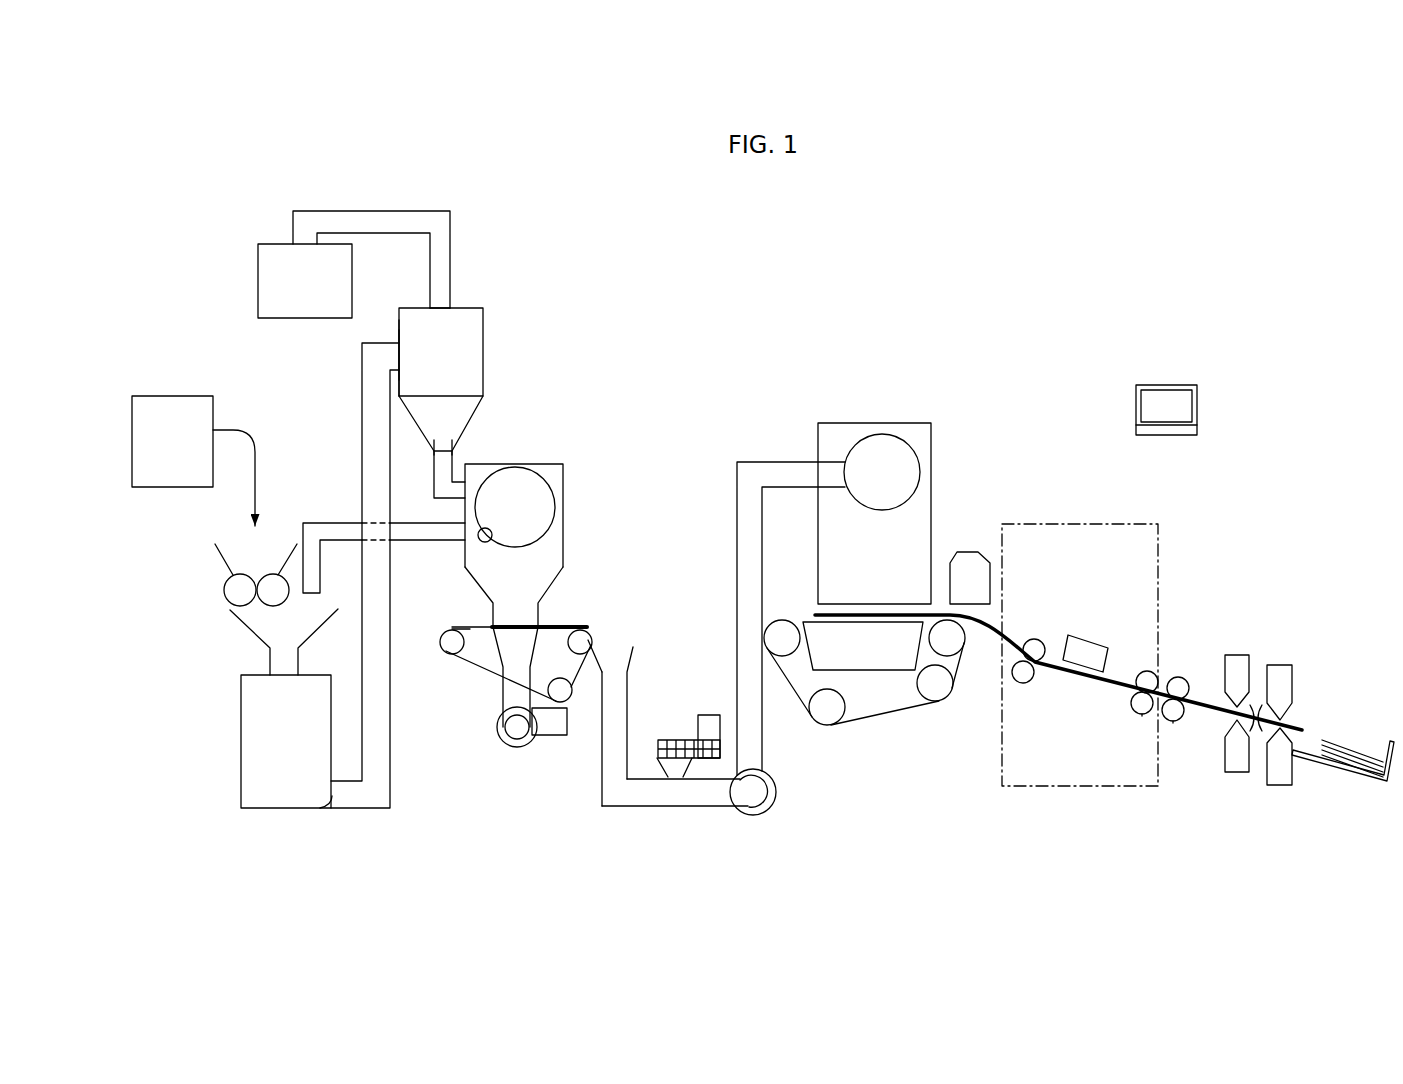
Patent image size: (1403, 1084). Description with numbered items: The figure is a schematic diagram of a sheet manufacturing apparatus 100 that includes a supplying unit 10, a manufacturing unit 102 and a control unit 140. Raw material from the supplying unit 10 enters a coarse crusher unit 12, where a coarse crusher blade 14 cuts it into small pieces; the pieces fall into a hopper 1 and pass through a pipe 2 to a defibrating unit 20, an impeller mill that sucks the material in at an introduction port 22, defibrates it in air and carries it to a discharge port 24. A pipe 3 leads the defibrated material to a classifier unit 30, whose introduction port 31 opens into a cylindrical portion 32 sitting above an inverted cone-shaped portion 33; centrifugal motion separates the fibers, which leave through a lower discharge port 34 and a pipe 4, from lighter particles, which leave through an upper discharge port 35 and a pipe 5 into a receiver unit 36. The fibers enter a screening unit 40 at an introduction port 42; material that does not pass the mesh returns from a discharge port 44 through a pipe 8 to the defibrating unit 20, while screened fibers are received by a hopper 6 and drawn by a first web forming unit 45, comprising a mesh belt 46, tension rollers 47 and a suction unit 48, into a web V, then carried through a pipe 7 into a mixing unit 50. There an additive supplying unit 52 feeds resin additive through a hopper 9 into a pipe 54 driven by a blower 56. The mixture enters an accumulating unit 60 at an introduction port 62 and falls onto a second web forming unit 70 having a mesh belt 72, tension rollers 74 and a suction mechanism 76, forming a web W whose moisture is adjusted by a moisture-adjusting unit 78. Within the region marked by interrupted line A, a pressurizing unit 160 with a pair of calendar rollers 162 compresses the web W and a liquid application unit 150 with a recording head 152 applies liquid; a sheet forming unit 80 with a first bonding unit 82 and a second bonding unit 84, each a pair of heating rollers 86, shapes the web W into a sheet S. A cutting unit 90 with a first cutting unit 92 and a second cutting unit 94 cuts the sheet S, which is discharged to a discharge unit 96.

The hopper 1 is at (245, 630).
The pipe 2 is at (277, 660).
The pipe 3 is at (383, 662).
The pipe 4 is at (442, 482).
The pipe 5 is at (387, 222).
The hopper 6 is at (548, 575).
The pipe 7 is at (618, 702).
The pipe 8 is at (415, 528).
The hopper 9 is at (657, 770).
The supplying unit 10 is at (146, 380).
The coarse crusher unit 12 is at (196, 555).
The coarse crusher blade 14 is at (233, 590).
The defibrating unit 20 is at (257, 823).
The introduction port 22 is at (282, 683).
The discharge port 24 is at (322, 808).
The classifier unit 30 is at (476, 298).
The introduction port 31 is at (401, 357).
The cylindrical portion 32 is at (468, 365).
The inverted cone-shaped portion 33 is at (455, 408).
The lower discharge port 34 is at (443, 438).
The upper discharge port 35 is at (440, 312).
The receiver unit 36 is at (275, 285).
The screening unit 40 is at (578, 454).
The introduction port 42 is at (490, 483).
The discharge port 44 is at (490, 548).
The first web forming unit 45 is at (603, 611).
The mesh belt 46 is at (452, 630).
The tension rollers 47 is at (452, 654).
The suction unit 48 is at (491, 656).
The mixing unit 50 is at (788, 814).
The additive supplying unit 52 is at (708, 718).
The pipe 54 is at (668, 795).
The blower 56 is at (753, 813).
The accumulating unit 60 is at (920, 410).
The introduction port 62 is at (852, 470).
The second web forming unit 70 is at (916, 742).
The mesh belt 72 is at (800, 616).
The tension rollers 74 is at (817, 712).
The suction mechanism 76 is at (867, 663).
The moisture-adjusting unit 78 is at (967, 562).
The sheet forming unit 80 is at (1230, 578).
The first bonding unit 82 is at (1150, 665).
The second bonding unit 84 is at (1184, 664).
The heating rollers 86 is at (1138, 705).
The cutting unit 90 is at (1307, 592).
The first cutting unit 92 is at (1245, 644).
The second cutting unit 94 is at (1283, 652).
The discharge unit 96 is at (1335, 770).
The sheet manufacturing apparatus 100 is at (964, 242).
The manufacturing unit 102 is at (1014, 344).
The control unit 140 is at (1205, 403).
The liquid application unit 150 is at (1117, 604).
The recording head 152 is at (1088, 652).
The pressurizing unit 160 is at (1037, 627).
The calendar rollers 162 is at (1025, 680).
The web V is at (524, 625).
The web W is at (938, 613).
The sheet S is at (1212, 712).
The portion enclosed by interrupted line A is at (1098, 523).